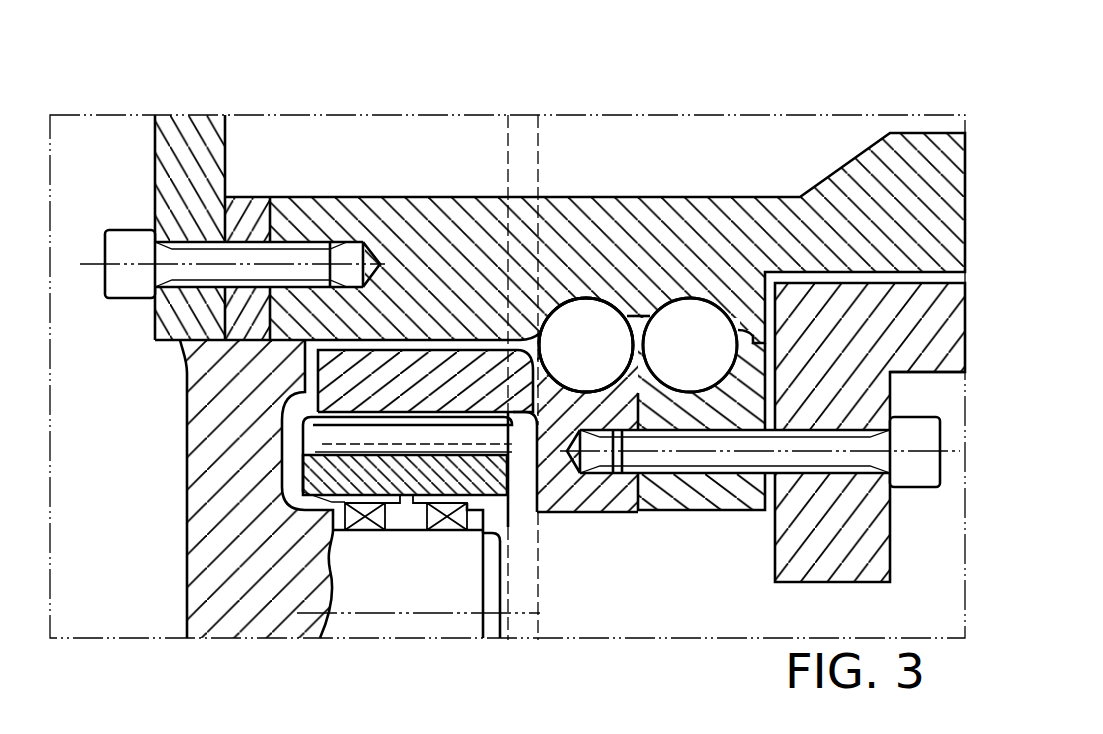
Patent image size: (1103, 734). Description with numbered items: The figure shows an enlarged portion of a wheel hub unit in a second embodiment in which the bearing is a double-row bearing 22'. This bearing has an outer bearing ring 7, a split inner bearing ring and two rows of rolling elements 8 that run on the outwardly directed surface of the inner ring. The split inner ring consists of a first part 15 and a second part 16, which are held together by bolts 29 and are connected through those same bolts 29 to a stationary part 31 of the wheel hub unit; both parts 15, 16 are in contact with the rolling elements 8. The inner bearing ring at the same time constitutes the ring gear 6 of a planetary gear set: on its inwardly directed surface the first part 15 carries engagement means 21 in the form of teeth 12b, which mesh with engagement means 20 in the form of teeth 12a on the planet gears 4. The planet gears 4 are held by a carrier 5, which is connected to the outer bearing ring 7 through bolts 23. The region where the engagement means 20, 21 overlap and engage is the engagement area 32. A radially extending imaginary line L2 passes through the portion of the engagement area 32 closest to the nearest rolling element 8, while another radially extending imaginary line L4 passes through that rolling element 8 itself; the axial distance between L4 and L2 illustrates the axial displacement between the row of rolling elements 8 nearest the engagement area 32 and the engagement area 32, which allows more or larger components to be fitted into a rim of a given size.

The planet gears 4 is at (383, 485).
The carrier 5 is at (272, 590).
The ring gear / inner bearing ring 6 is at (565, 417).
The outer bearing ring 7 is at (583, 318).
The rolling elements 8 is at (577, 275).
The teeth 12a is at (312, 442).
The teeth 12b is at (312, 487).
The first part of the split inner bearing ring 15 is at (593, 492).
The second part of the split inner bearing ring 16 is at (712, 492).
The engagement means 20 is at (447, 452).
The engagement means 21 is at (403, 387).
The double-row bearing 22' is at (560, 197).
The bolts 23 is at (128, 230).
The bolts 29 is at (913, 390).
The stationary part 31 is at (850, 323).
The engagement area 32 is at (336, 470).
The radially extending imaginary line L2 is at (505, 171).
The straight imaginary line L4 is at (538, 170).